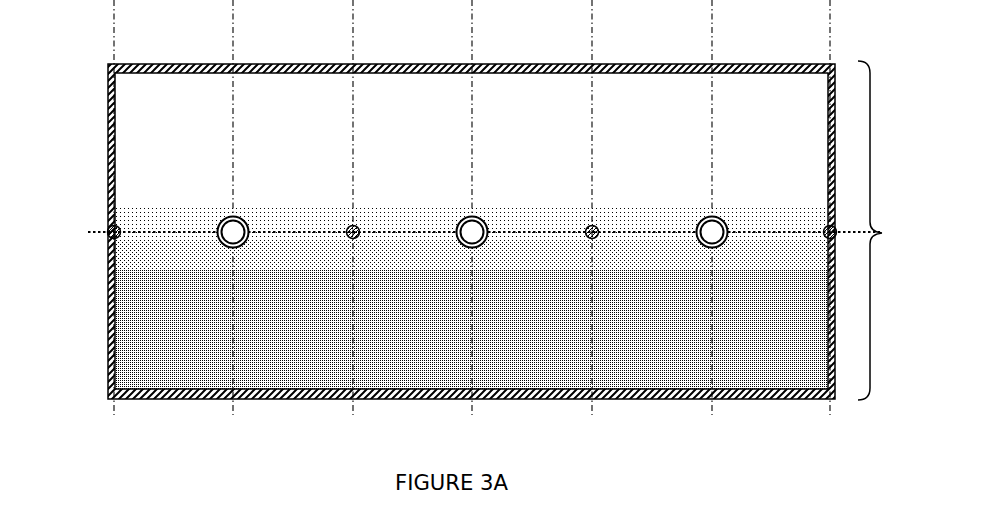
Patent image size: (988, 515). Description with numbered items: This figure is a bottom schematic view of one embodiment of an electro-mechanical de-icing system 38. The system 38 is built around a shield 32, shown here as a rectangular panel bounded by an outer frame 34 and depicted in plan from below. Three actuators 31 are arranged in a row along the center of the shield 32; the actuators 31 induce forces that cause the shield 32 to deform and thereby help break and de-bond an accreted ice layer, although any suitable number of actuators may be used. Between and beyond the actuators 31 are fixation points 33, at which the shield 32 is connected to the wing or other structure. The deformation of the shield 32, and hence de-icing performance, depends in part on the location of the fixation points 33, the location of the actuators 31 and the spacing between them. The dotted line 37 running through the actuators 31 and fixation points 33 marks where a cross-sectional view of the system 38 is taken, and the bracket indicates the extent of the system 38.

The actuator 31 is at (228, 217).
The shield 32 is at (178, 292).
The fixation point 33 is at (590, 234).
The frame border 34 is at (637, 63).
The line 37 is at (635, 233).
The electro-mechanical de-icing system 38 is at (887, 230).